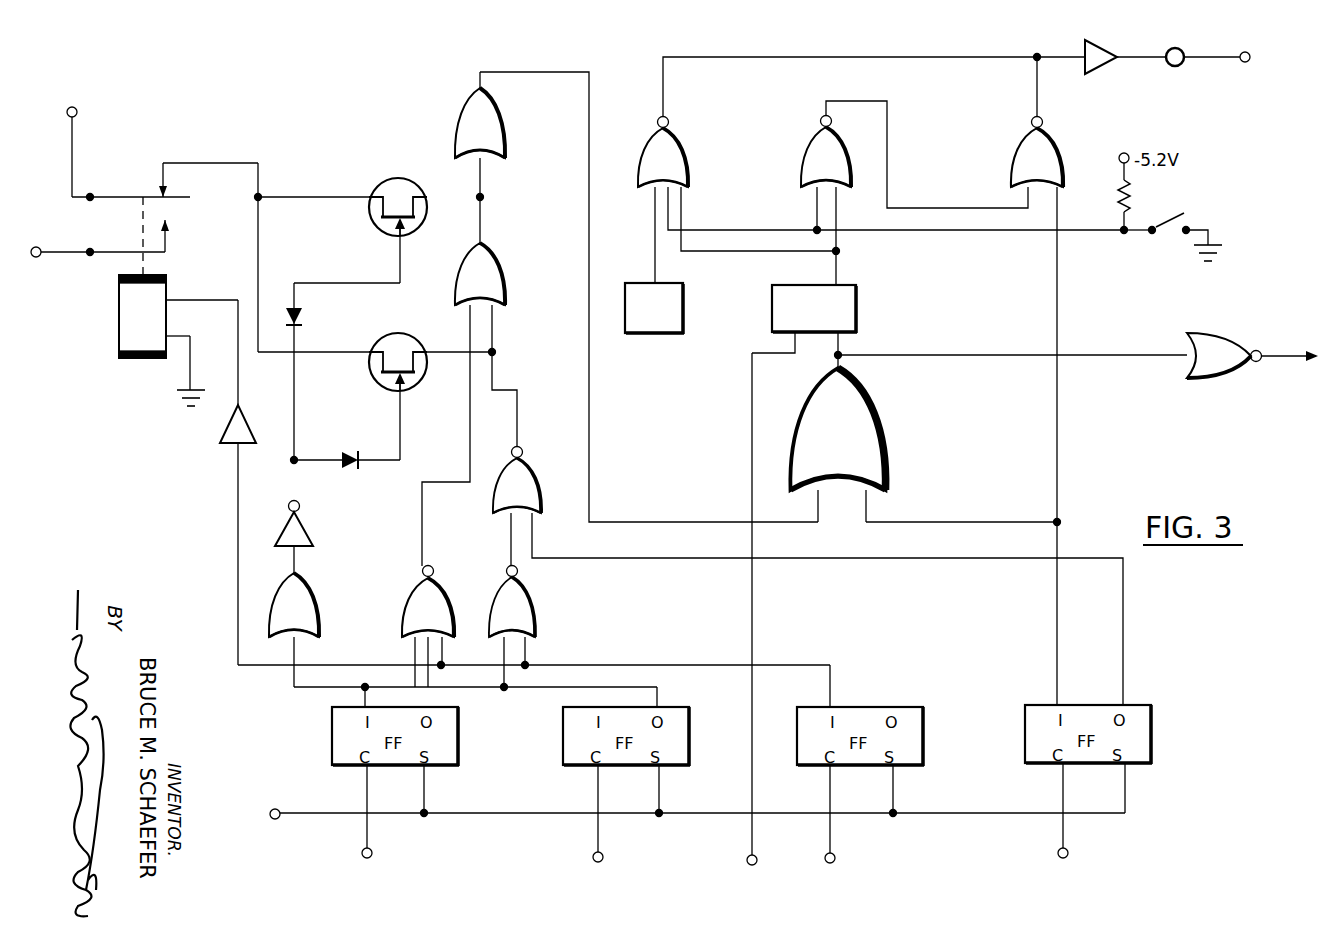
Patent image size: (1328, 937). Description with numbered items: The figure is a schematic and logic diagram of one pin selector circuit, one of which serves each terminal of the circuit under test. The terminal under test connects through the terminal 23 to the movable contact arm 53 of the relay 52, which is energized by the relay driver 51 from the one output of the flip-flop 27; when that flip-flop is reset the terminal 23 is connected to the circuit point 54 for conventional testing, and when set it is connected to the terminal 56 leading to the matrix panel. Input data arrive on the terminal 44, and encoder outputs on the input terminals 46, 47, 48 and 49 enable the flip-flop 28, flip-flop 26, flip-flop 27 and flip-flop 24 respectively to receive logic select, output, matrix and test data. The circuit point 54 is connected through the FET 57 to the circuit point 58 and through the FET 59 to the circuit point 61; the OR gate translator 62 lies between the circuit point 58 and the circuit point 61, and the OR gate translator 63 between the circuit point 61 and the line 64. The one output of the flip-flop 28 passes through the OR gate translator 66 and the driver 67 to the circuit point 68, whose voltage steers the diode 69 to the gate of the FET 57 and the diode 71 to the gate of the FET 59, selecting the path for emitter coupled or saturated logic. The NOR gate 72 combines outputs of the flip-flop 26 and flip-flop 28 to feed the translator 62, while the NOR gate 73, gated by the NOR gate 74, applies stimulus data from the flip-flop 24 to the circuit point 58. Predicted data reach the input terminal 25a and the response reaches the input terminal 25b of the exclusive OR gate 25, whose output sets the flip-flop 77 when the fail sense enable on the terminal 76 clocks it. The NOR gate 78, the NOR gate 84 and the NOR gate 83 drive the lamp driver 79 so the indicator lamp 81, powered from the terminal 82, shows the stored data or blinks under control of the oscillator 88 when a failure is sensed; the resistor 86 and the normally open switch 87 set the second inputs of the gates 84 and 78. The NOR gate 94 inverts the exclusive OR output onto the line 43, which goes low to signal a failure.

The terminal 23 is at (66, 112).
The movable contact arm 53 is at (180, 197).
The circuit point 54 is at (262, 195).
The terminal 56 is at (38, 247).
The relay 52 is at (119, 337).
The relay driver 51 is at (242, 415).
The field effect transistor 59 is at (399, 178).
The diode 71 is at (300, 316).
The field effect transistor 57 is at (408, 333).
The circuit point 58 is at (496, 352).
The circuit point 68 is at (296, 455).
The diode 69 is at (353, 466).
The OR gate translator 63 is at (503, 122).
The line 64 is at (589, 140).
The circuit point 61 is at (484, 197).
The OR gate translator 62 is at (505, 276).
The NOR gate 73 is at (525, 456).
The NOR gate 74 is at (535, 615).
The NOR gate 72 is at (409, 590).
The driver 67 is at (310, 535).
The OR gate translator 66 is at (322, 612).
The flip-flop 28 is at (460, 740).
The input terminal 46 is at (362, 859).
The terminal 44 is at (279, 819).
The flip-flop 26 is at (692, 740).
The input terminal 47 is at (592, 862).
The flip-flop 27 is at (925, 740).
The input terminal 48 is at (826, 857).
The flip-flop 24 is at (1155, 735).
The input terminal 49 is at (1058, 855).
The terminal 76 is at (750, 859).
The flip-flop 77 is at (858, 300).
The exclusive OR gate 25 is at (888, 434).
The input terminal 25b is at (816, 503).
The input terminal 25a is at (870, 505).
The NOR gate 78 is at (690, 160).
The oscillator 88 is at (686, 302).
The NOR gate 84 is at (808, 153).
The NOR gate 83 is at (1062, 150).
The lamp driver 79 is at (1101, 72).
The indicator lamp 81 is at (1182, 50).
The terminal 82 is at (1244, 63).
The resistor 86 is at (1136, 196).
The switch 87 is at (1172, 234).
The NOR gate 94 is at (1215, 332).
The line 43 is at (1266, 348).